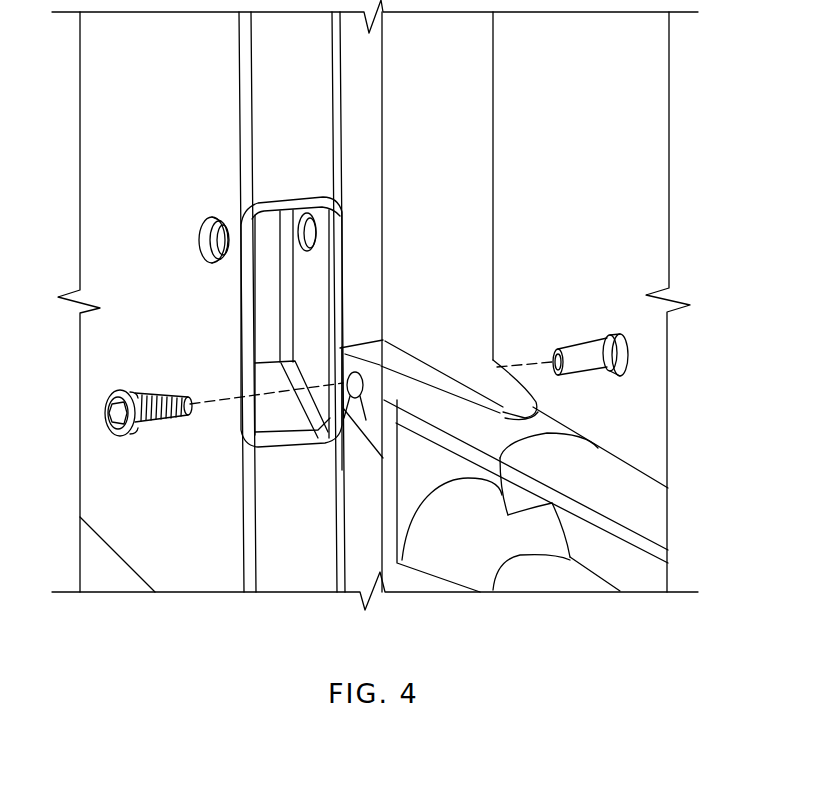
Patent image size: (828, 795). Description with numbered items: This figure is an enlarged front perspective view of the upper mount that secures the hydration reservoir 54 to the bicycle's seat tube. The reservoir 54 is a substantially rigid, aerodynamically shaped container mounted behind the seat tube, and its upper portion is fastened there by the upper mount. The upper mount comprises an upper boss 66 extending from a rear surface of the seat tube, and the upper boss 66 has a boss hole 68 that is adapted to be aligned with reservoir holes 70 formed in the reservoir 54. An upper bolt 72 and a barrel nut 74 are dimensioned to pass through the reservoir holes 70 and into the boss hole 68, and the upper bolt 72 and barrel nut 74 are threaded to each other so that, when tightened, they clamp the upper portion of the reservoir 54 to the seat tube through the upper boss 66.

The reservoir 54 is at (143, 112).
The upper boss 66 is at (370, 338).
The boss hole 68 is at (347, 402).
The reservoir holes 70 is at (207, 256).
The upper bolt 72 is at (157, 416).
The barrel nut 74 is at (592, 348).